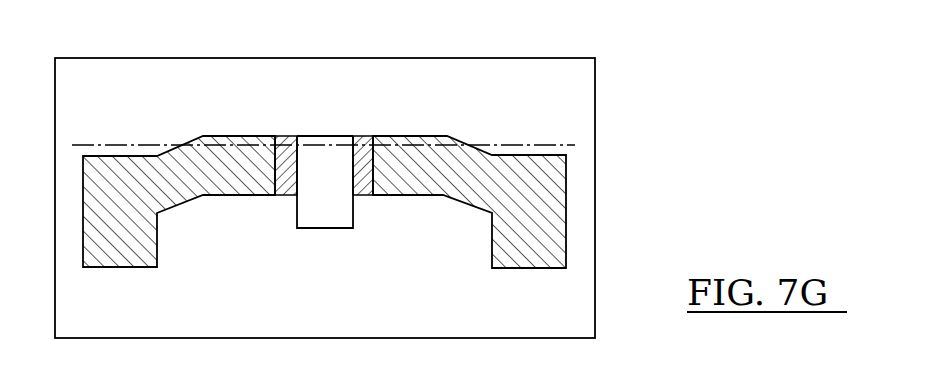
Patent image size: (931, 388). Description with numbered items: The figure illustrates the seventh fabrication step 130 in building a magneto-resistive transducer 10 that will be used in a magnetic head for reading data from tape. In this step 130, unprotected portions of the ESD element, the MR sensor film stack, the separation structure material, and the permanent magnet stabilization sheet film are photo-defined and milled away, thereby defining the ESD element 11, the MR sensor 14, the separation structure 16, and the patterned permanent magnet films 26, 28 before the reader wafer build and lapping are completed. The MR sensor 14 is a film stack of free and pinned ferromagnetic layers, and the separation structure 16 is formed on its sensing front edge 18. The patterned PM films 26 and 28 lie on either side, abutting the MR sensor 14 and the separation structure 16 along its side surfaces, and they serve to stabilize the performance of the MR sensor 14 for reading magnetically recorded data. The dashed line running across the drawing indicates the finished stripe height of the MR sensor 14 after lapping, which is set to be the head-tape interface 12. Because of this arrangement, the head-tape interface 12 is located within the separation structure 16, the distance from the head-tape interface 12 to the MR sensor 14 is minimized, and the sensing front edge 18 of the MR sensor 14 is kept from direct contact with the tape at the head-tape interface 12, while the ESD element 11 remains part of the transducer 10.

The seventh fabrication step 130 is at (618, 106).
The head-tape interface 12 is at (518, 142).
The MR transducer 10 is at (324, 185).
The permanent magnet film 26 is at (157, 193).
The permanent magnet film 28 is at (482, 185).
The front side or edge 18 is at (292, 150).
The MR sensor 14 is at (366, 191).
The ESD element 11 is at (325, 218).
The separation structure 16 is at (341, 130).